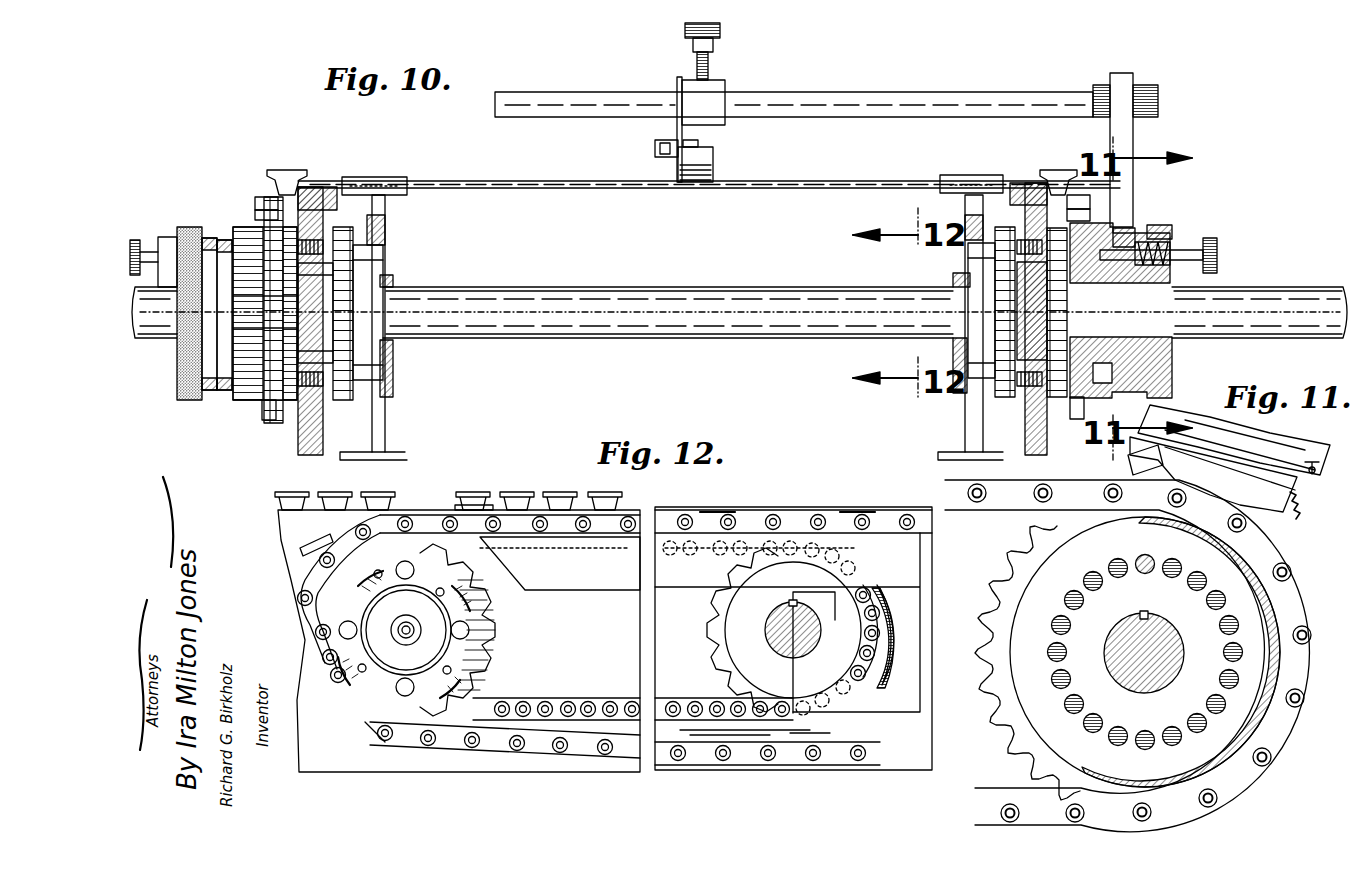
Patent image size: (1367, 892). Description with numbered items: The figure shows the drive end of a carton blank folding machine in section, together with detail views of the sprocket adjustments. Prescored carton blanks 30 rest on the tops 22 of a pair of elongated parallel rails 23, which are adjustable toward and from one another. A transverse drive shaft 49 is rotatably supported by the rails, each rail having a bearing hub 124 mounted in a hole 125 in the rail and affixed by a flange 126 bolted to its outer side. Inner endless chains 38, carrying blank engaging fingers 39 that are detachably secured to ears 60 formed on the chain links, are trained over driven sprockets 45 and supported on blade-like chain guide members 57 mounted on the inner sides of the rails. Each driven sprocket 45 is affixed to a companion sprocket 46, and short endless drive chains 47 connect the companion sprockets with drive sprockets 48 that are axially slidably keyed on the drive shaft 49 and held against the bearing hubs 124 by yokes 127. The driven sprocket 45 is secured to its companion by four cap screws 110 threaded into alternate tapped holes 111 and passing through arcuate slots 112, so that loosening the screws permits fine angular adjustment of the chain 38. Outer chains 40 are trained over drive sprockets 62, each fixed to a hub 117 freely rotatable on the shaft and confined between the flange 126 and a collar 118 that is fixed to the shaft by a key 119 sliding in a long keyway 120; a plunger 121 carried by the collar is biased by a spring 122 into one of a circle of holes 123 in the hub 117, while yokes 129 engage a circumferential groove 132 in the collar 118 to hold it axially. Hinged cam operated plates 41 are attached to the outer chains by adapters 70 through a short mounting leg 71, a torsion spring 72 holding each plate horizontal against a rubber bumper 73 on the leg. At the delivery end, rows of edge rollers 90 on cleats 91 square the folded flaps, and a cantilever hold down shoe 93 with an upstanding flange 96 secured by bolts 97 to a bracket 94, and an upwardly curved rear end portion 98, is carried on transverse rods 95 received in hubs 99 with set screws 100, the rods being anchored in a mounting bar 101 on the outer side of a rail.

In FIG. 10, the tops of the rails 22 is at (320, 190).
In FIG. 12, the tops of the rails 22 is at (760, 507).
In FIG. 10, the rails 23 is at (298, 440).
In FIG. 12, the rails 23 is at (905, 762).
In FIG. 10, the carton blank 30 is at (800, 181).
In FIG. 10, the endless chains 38 is at (387, 215).
In FIG. 12, the endless chains 38 is at (800, 520).
In FIG. 10, the blank engaging fingers 39 is at (395, 178).
In FIG. 12, the blank engaging fingers 39 is at (475, 492).
In FIG. 10, the outer chains 40 is at (257, 205).
In FIG. 11, the outer chains 40 is at (1252, 778).
In FIG. 11, the hinged cam operated plates 41 is at (1295, 450).
In FIG. 12, the driven sprocket 45 is at (470, 680).
In FIG. 12, the companion sprocket 46 is at (490, 620).
In FIG. 10, the drive chains 47 is at (345, 398).
In FIG. 12, the drive chains 47 is at (557, 698).
In FIG. 10, the drive sprockets 48 is at (350, 265).
In FIG. 12, the drive sprockets 48 is at (712, 640).
In FIG. 10, the drive shaft 49 is at (785, 290).
In FIG. 12, the drive shaft 49 is at (780, 642).
In FIG. 11, the drive shaft 49 is at (1120, 638).
In FIG. 10, the chain guide members 57 is at (385, 230).
In FIG. 12, the chain guide members 57 is at (878, 560).
In FIG. 10, the ears 60 is at (952, 455).
In FIG. 12, the ears 60 is at (327, 540).
In FIG. 10, the drive sprockets 62 is at (255, 395).
In FIG. 11, the drive sprockets 62 is at (1002, 740).
In FIG. 11, the adapters 70 is at (1290, 538).
In FIG. 11, the mounting leg 71 is at (1132, 458).
In FIG. 11, the torsion spring 72 is at (1300, 512).
In FIG. 11, the rubber bumper 73 is at (1195, 490).
In FIG. 10, the edge rollers 90 is at (285, 170).
In FIG. 12, the edge rollers 90 is at (300, 492).
In FIG. 10, the cleats 91 is at (262, 197).
In FIG. 10, the hold down shoe 93 is at (713, 172).
In FIG. 10, the bracket 94 is at (677, 122).
In FIG. 10, the rods 95 is at (862, 92).
In FIG. 10, the upstanding flange 96 is at (678, 168).
In FIG. 10, the bolts 97 is at (655, 148).
In FIG. 10, the upwardly curved rear end portion 98 is at (713, 155).
In FIG. 10, the hubs 99 is at (720, 90).
In FIG. 10, the set screws 100 is at (720, 28).
In FIG. 10, the mounting bar 101 is at (1133, 126).
In FIG. 12, the cap screws 110 is at (412, 568).
In FIG. 12, the tapped holes 111 is at (375, 578).
In FIG. 12, the arcuate slots 112 is at (390, 570).
In FIG. 10, the hub 117 is at (225, 392).
In FIG. 11, the hub 117 is at (1020, 700).
In FIG. 10, the collar 118 is at (195, 235).
In FIG. 10, the key 119 is at (1155, 267).
In FIG. 10, the keyway 120 is at (1342, 288).
In FIG. 11, the keyway 120 is at (1142, 615).
In FIG. 10, the plunger 121 is at (1110, 262).
In FIG. 11, the plunger 121 is at (1150, 575).
In FIG. 10, the spring 122 is at (953, 280).
In FIG. 11, the holes 123 is at (1107, 576).
In FIG. 10, the bearing hub 124 is at (310, 313).
In FIG. 10, the hole 125 is at (300, 285).
In FIG. 10, the flange 126 is at (272, 235).
In FIG. 10, the yokes 127 is at (393, 371).
In FIG. 12, the yokes 127 is at (885, 710).
In FIG. 10, the yokes 129 is at (207, 392).
In FIG. 10, the circumferential groove 132 is at (1172, 385).